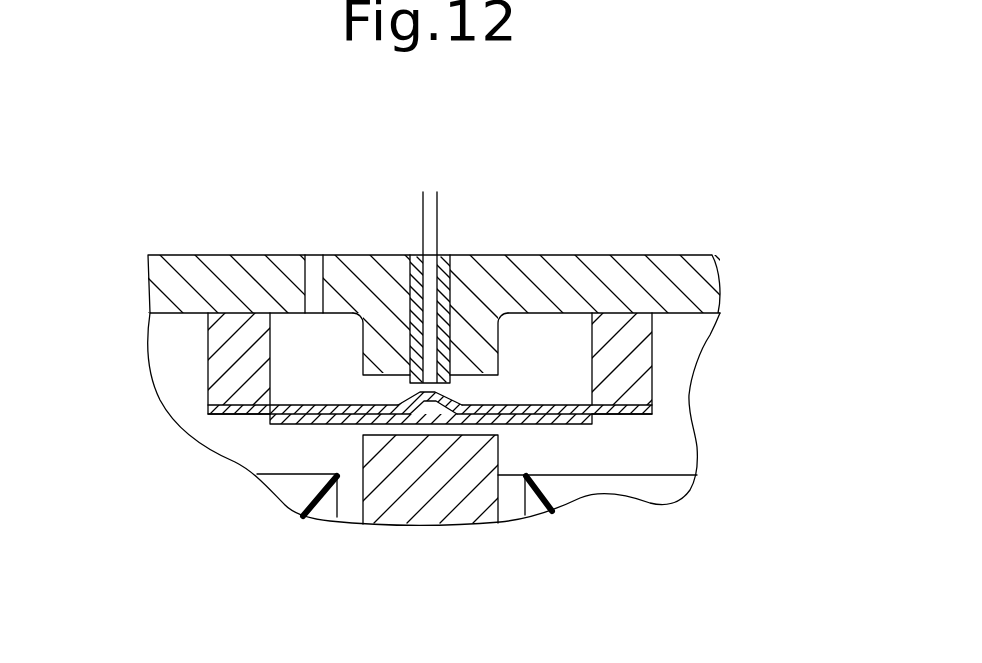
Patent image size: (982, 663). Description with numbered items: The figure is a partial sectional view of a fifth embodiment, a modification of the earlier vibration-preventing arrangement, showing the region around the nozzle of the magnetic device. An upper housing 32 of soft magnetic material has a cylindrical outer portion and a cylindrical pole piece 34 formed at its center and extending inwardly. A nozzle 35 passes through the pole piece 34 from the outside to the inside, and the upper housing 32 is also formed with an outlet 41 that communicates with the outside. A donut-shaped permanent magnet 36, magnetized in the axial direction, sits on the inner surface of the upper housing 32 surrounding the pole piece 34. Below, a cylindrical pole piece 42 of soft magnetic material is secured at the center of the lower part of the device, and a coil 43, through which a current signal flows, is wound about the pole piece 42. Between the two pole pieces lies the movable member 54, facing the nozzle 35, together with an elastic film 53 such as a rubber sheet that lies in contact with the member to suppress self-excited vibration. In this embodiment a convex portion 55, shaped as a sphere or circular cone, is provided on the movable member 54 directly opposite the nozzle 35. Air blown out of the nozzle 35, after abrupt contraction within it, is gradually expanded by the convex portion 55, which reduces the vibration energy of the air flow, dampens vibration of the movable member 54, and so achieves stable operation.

The upper housing 32 is at (703, 272).
The pole piece 34 is at (468, 343).
The nozzle 35 is at (432, 332).
The permanent magnet 36 is at (627, 362).
The outlet 41 is at (314, 273).
The pole piece 42 is at (440, 500).
The coil 43 is at (562, 492).
The elastic film 53 is at (298, 427).
The movable member 54 is at (623, 418).
The convex portion 55 is at (406, 397).